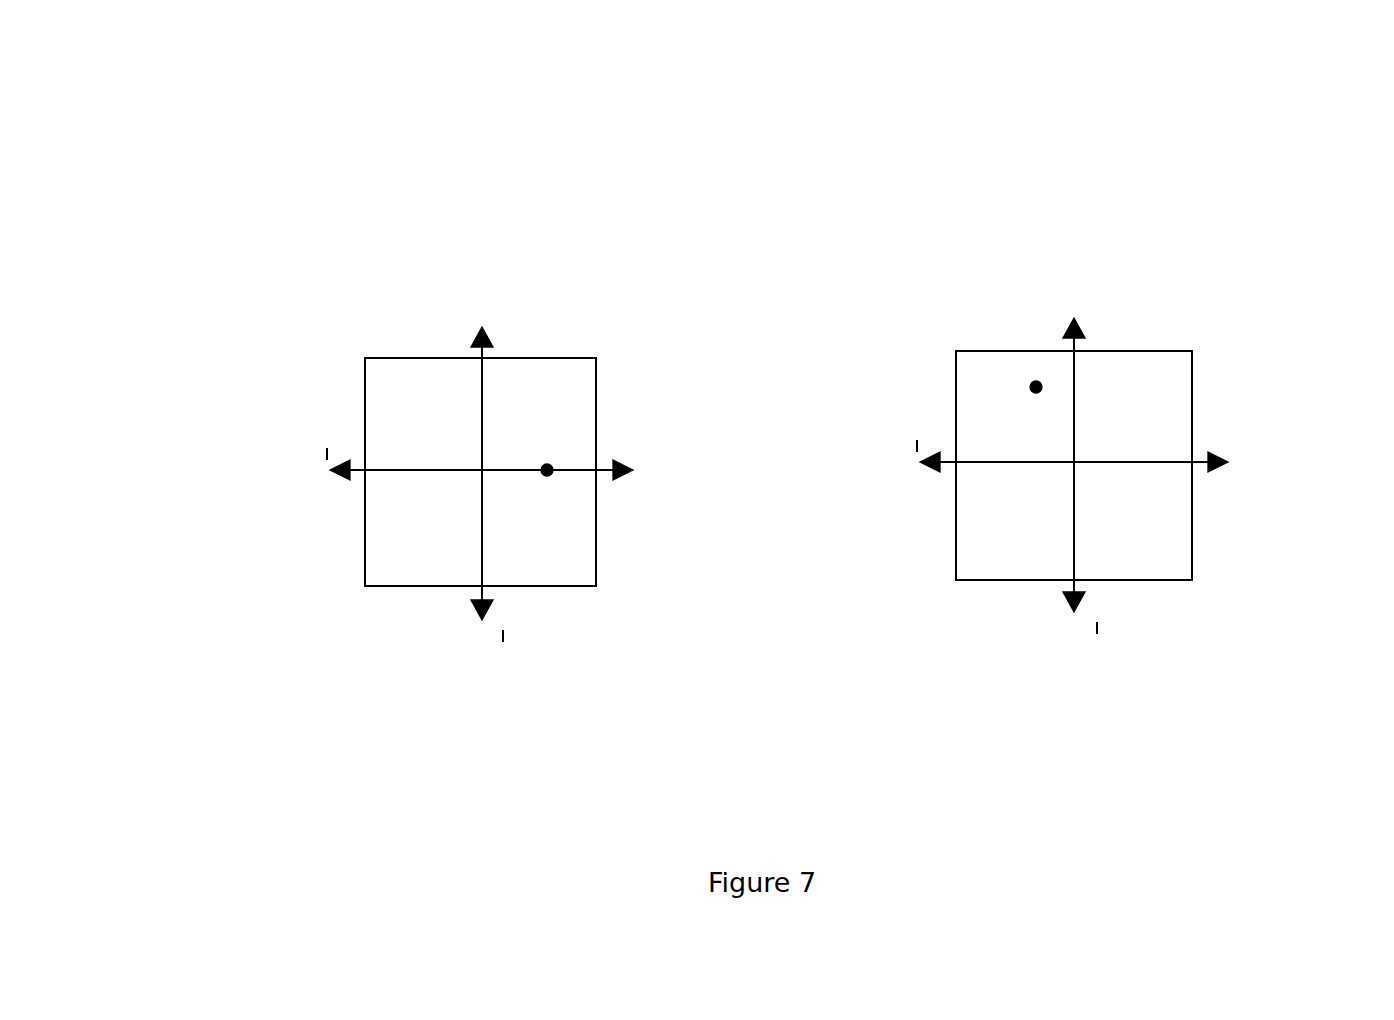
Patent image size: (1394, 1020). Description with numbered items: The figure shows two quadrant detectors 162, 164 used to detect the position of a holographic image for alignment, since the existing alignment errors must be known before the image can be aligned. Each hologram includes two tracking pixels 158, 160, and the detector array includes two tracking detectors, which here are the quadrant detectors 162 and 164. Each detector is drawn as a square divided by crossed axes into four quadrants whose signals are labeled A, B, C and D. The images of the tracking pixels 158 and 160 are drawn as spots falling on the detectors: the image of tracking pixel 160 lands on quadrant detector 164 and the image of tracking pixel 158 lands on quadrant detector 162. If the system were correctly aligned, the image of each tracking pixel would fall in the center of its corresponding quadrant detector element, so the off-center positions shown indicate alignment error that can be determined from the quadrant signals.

The tracking pixel 158 is at (1036, 387).
The tracking pixel 160 is at (547, 470).
The quadrant detector 162 is at (1223, 335).
The quadrant detector 164 is at (295, 352).